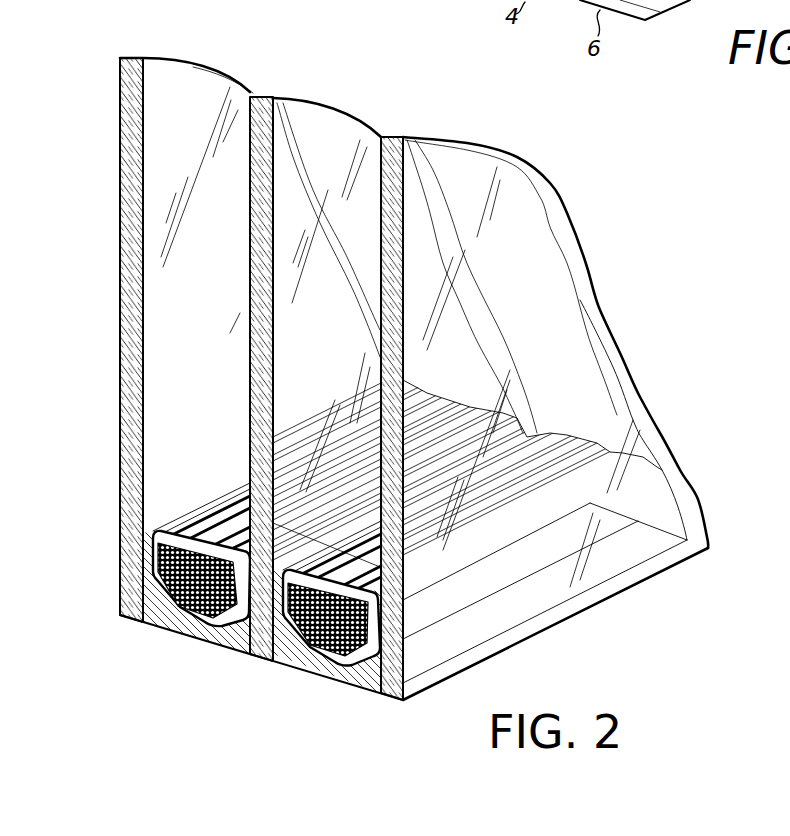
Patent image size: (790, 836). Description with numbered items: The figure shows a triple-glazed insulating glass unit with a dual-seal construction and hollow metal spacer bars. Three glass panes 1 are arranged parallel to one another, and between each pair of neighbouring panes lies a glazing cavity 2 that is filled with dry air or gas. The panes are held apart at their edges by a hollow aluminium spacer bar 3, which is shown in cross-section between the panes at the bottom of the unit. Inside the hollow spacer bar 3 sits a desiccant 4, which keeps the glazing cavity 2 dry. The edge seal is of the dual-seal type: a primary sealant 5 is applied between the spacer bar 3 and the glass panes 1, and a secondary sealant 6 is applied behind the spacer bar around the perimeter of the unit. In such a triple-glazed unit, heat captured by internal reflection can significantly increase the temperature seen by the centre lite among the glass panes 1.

The glass panes 1 is at (195, 85).
The glazing cavity 2 is at (168, 332).
The hollow aluminium spacer bar 3 is at (353, 555).
The desiccant 4 is at (178, 598).
The primary sealant 5 is at (528, 437).
The secondary sealant 6 is at (233, 640).